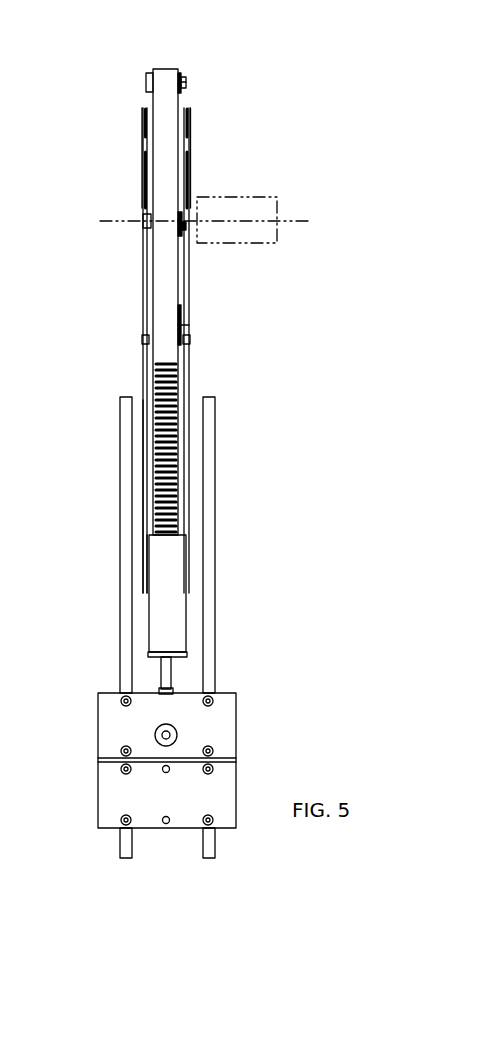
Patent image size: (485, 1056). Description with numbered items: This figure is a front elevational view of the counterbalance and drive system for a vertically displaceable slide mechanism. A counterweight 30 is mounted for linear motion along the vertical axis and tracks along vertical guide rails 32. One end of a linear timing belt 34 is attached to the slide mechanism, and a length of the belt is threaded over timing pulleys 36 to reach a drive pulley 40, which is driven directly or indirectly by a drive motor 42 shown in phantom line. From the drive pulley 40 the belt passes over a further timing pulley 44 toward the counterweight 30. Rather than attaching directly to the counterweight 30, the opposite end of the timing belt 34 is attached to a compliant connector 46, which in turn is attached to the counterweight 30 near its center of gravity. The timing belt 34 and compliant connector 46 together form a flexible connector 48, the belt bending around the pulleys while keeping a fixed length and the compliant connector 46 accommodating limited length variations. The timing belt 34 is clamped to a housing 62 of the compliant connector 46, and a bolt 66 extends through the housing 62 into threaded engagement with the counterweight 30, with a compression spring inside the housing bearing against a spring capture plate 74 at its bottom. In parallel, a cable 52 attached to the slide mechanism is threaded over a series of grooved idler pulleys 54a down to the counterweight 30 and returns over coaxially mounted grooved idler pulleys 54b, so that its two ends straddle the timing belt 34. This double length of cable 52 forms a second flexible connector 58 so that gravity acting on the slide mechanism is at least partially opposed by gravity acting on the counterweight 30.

The counterweight 30 is at (105, 796).
The vertical guide rails 32 is at (214, 428).
The linear timing belt 34 is at (181, 100).
The timing pulleys 36 is at (187, 83).
The drive pulley 40 is at (152, 228).
The drive motor 42 is at (279, 233).
The timing pulley 44 is at (186, 325).
The compliant connector 46 is at (150, 635).
The flexible connector 48 is at (178, 522).
The cable 52 is at (143, 305).
The grooved idler pulleys 54a is at (141, 120).
The grooved idler pulleys 54b is at (191, 120).
The flexible connector 58 is at (142, 492).
The housing 62 is at (172, 607).
The bolt 66 is at (170, 672).
The spring capture plate 74 is at (150, 670).